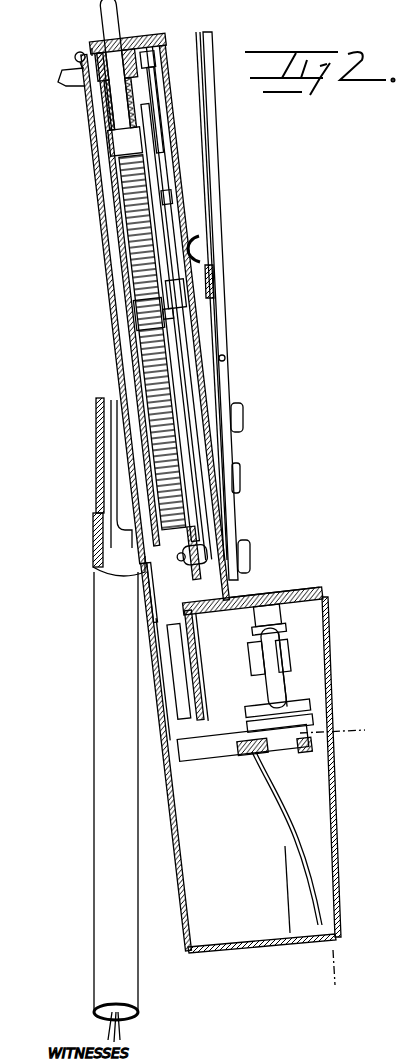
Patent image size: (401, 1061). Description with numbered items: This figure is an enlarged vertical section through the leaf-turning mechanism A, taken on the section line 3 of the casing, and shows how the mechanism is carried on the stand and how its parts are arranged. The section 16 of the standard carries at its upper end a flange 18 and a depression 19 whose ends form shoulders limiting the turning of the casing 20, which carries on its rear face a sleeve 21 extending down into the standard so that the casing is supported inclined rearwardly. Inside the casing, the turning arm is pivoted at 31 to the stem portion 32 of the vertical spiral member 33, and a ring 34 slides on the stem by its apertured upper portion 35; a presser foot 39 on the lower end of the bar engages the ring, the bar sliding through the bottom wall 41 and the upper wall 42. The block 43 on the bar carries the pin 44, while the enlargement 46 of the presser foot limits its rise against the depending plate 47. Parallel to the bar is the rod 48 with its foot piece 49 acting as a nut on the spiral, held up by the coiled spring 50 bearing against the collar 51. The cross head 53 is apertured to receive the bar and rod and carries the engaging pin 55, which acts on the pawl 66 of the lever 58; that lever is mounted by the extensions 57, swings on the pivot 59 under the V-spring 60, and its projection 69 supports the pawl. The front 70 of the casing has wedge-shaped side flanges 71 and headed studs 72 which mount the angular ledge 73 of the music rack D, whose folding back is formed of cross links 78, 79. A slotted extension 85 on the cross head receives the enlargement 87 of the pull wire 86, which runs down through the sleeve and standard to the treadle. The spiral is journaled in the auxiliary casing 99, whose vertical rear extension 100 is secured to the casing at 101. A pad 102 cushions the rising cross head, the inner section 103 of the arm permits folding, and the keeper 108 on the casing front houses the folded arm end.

The section line 3 is at (332, 861).
The section of the standard 16 is at (94, 878).
The flange 18 is at (92, 516).
The depression 19 is at (118, 508).
The casing 20 is at (118, 305).
The sleeve 21 is at (95, 405).
The pivot 31 is at (292, 649).
The stem portion 32 is at (278, 614).
The spiral member 33 is at (296, 852).
The ring 34 is at (278, 678).
The apertured upper portion 35 is at (256, 628).
The presser foot 39 is at (300, 710).
The bottom wall 41 is at (300, 596).
The upper wall 42 is at (135, 45).
The block or stop member 43 is at (132, 318).
The pin 44 is at (222, 336).
The enlargement 46 is at (204, 716).
The depending plate 47 is at (196, 664).
The rod 48 is at (117, 24).
The foot piece 49 is at (246, 754).
The coiled spring 50 is at (128, 344).
The collar or strap member 51 is at (107, 142).
The cross head 53 is at (120, 90).
The engaging pin 55 is at (150, 60).
The extensions 57 is at (198, 522).
The lever 58 is at (214, 362).
The pivot 59 is at (208, 548).
The V-spring 60 is at (170, 272).
The pawl 66 is at (152, 100).
The projection 69 is at (163, 172).
The front of the casing 70 is at (176, 228).
The side flanges 71 is at (214, 438).
The headed studs 72 is at (236, 418).
The angular ledge 73 is at (296, 592).
The cross links 78 is at (214, 282).
The cross links 79 is at (213, 380).
The slotted extension 85 is at (74, 82).
The pull wire 86 is at (97, 206).
The enlargement 87 is at (79, 52).
The auxiliary casing 99 is at (264, 784).
The vertical rear extension 100 is at (148, 622).
The securing point 101 is at (144, 585).
The pad or cushion 102 is at (98, 42).
The inner or attaching section 103 is at (298, 635).
The curved pocket or keeper 108 is at (203, 248).
The leaf-turning mechanism A is at (210, 310).
The music rack D is at (222, 178).